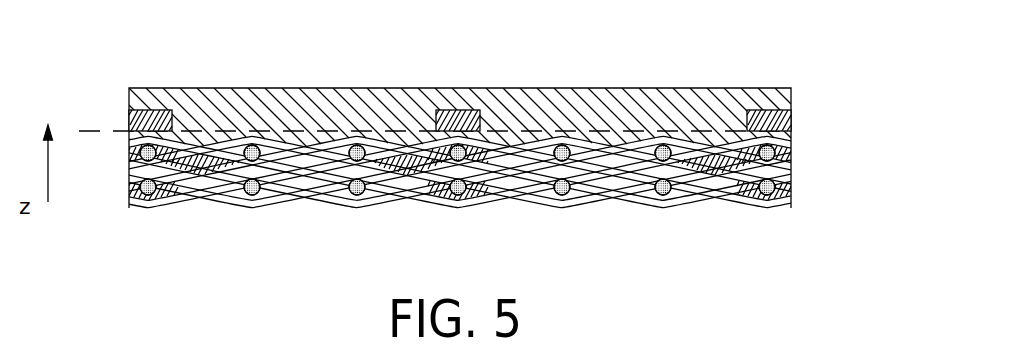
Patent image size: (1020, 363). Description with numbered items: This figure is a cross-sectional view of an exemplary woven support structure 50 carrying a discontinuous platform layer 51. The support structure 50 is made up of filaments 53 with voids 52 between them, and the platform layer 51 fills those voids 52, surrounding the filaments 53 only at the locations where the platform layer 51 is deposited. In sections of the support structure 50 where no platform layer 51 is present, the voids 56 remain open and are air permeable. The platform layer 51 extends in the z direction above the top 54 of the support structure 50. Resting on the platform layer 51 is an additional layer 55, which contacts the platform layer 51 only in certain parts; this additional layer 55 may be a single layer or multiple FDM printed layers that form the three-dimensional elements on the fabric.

The woven support structure 50 is at (822, 160).
The discontinuous platform layer 51 is at (147, 112).
The voids 52 is at (131, 187).
The filaments 53 is at (357, 206).
The top of the support structure 54 is at (100, 129).
The additional layer 55 is at (520, 104).
The voids 56 is at (306, 174).